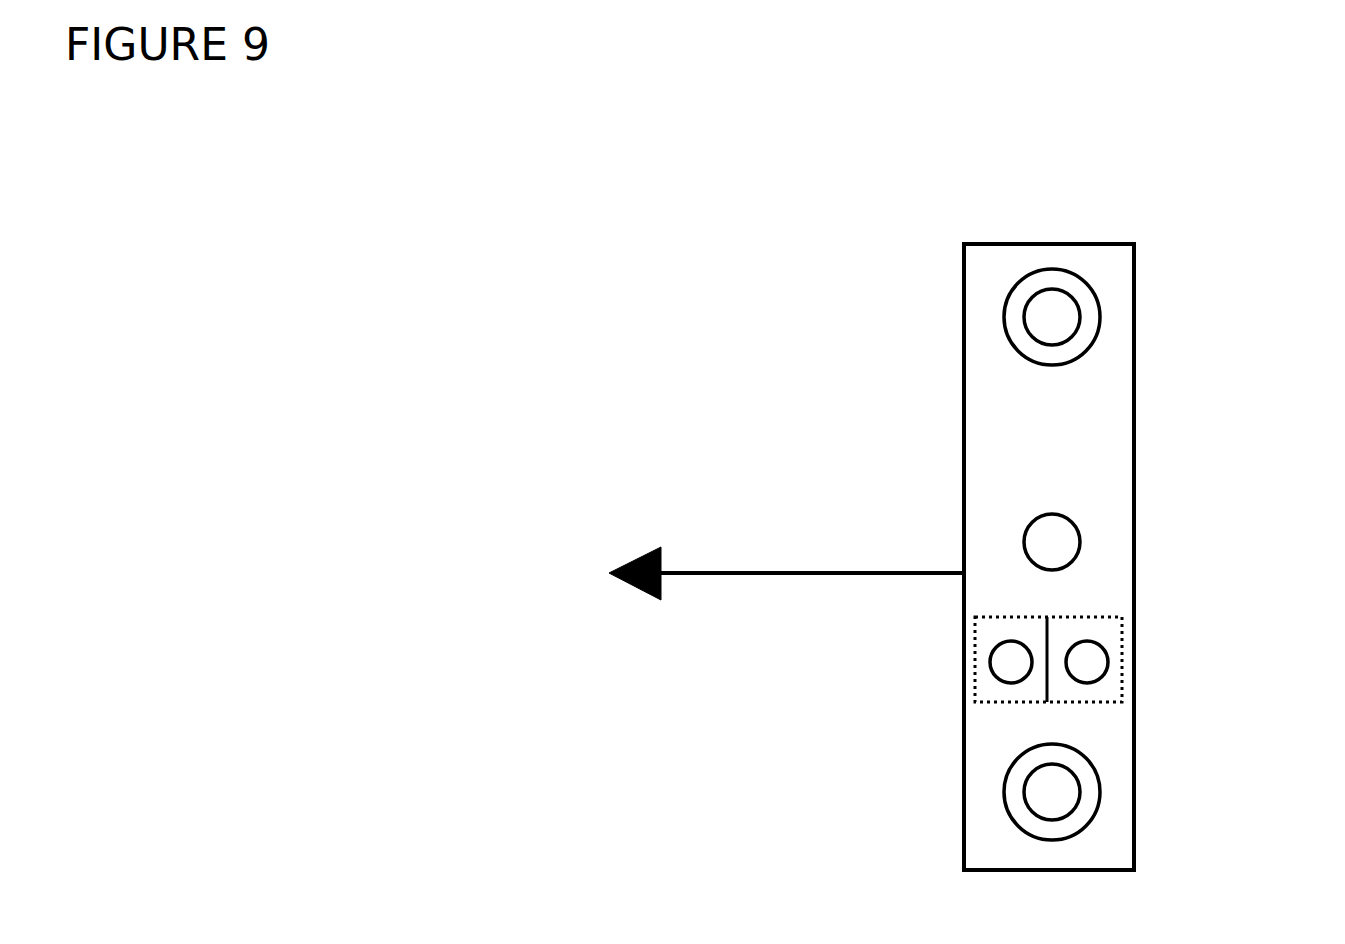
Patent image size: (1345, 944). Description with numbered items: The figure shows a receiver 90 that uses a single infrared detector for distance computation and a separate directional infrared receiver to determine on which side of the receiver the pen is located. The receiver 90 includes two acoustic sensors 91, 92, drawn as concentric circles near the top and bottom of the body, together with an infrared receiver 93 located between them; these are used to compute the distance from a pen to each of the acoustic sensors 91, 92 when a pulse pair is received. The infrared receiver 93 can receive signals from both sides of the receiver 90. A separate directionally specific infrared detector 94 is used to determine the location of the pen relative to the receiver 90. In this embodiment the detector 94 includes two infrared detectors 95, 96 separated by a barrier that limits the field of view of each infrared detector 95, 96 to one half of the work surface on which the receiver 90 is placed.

The receiver 90 is at (1104, 413).
The acoustic sensor 91 is at (1057, 272).
The acoustic sensor 92 is at (1045, 830).
The infrared receiver 93 is at (1078, 536).
The directionally specific infrared detector 94 is at (1120, 646).
The infrared detector 95 is at (1098, 678).
The infrared detector 96 is at (993, 660).